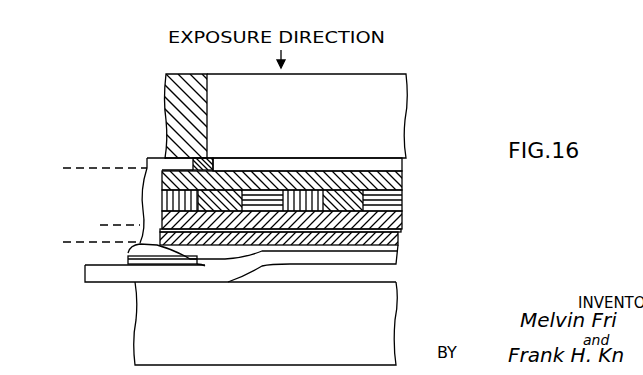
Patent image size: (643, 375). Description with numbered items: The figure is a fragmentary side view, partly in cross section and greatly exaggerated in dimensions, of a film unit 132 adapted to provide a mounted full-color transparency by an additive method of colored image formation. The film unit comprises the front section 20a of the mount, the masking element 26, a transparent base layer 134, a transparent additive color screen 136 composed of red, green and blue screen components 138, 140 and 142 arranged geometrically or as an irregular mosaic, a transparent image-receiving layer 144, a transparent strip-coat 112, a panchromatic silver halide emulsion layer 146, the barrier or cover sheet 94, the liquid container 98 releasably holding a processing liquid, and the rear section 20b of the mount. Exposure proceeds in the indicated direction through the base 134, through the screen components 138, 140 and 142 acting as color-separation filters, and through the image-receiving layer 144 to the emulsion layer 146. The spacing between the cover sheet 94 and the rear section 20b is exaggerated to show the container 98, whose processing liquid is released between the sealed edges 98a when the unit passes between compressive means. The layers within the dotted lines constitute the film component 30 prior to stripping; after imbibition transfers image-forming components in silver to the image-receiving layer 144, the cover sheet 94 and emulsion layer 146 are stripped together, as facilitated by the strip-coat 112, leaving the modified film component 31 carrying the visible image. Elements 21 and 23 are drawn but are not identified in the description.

The film unit 132 is at (151, 115).
The front section of the mount 20a is at (200, 156).
The rear section of the mount 20b is at (380, 330).
The housing wall 21 is at (147, 161).
The sealing element 23 is at (242, 161).
The masking element 26 is at (402, 164).
The film component 30 is at (58, 168).
The modified film component 31 is at (104, 168).
The cover sheet 94 is at (397, 265).
The liquid container 98 is at (130, 252).
The sealed edges 98a is at (210, 266).
The strip-coat 112 is at (402, 233).
The transparent base layer 134 is at (402, 184).
The transparent additive color screen 136 is at (402, 204).
The red screen component 138 is at (306, 176).
The green screen component 140 is at (339, 177).
The blue screen component 142 is at (385, 177).
The transparent image-receiving layer 144 is at (402, 226).
The silver halide emulsion layer 146 is at (400, 246).